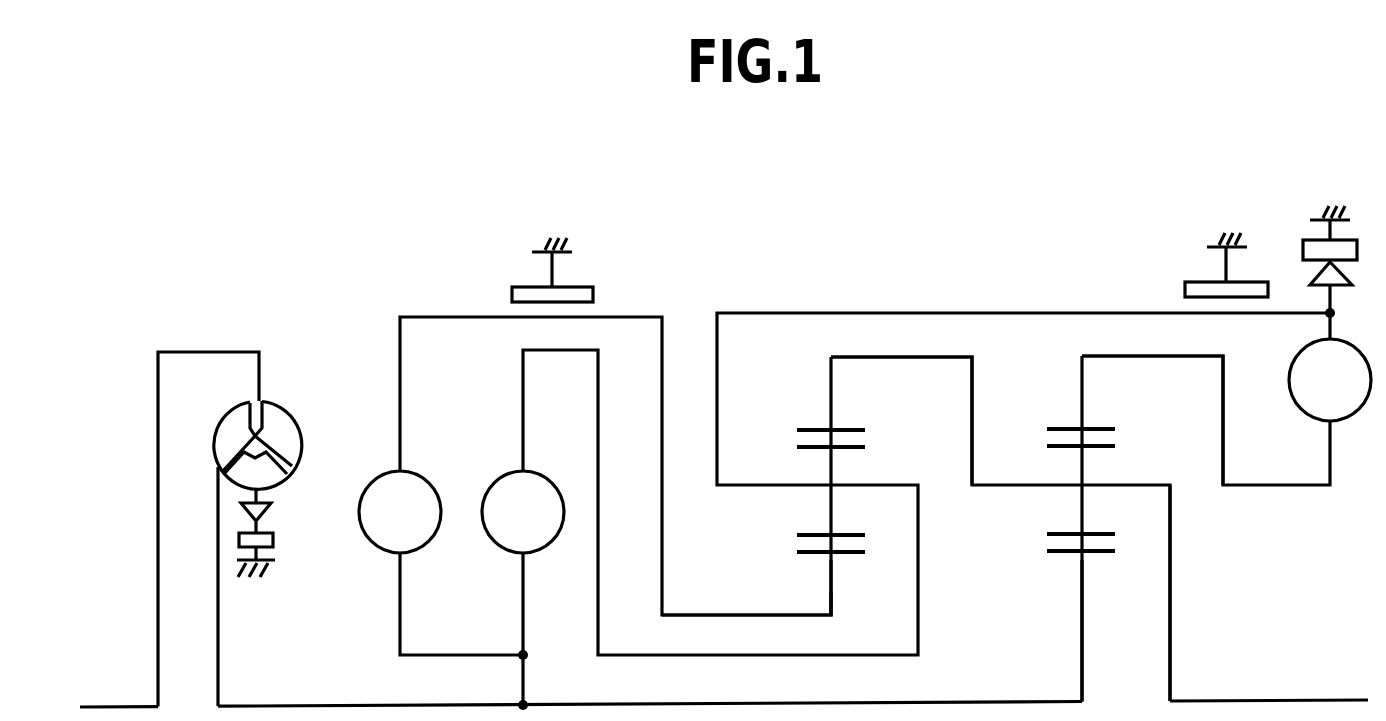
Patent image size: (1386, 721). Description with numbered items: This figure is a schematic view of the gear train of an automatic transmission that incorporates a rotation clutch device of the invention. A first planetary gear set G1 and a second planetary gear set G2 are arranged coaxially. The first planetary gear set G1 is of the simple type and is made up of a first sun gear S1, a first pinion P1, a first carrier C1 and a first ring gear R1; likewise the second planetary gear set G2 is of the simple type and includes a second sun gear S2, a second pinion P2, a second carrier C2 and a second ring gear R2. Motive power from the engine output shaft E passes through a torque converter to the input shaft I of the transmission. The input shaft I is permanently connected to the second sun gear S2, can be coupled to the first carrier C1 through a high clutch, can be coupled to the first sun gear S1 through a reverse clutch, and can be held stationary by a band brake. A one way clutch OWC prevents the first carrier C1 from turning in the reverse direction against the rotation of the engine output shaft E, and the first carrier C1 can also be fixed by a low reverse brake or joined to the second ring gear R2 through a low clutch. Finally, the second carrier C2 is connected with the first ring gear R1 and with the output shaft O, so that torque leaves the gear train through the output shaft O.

The engine output shaft E is at (112, 706).
The input shaft I is at (300, 706).
The output shaft O is at (1260, 700).
The one way clutch OWC is at (1312, 272).
The first planetary gear set G1 is at (815, 351).
The first ring gear R1 is at (831, 390).
The first carrier C1 is at (757, 484).
The first pinion P1 is at (831, 516).
The first sun gear S1 is at (831, 592).
The second planetary gear set G2 is at (1068, 351).
The second ring gear R2 is at (1082, 390).
The second carrier C2 is at (1006, 484).
The second pinion P2 is at (1082, 513).
The second sun gear S2 is at (1082, 591).